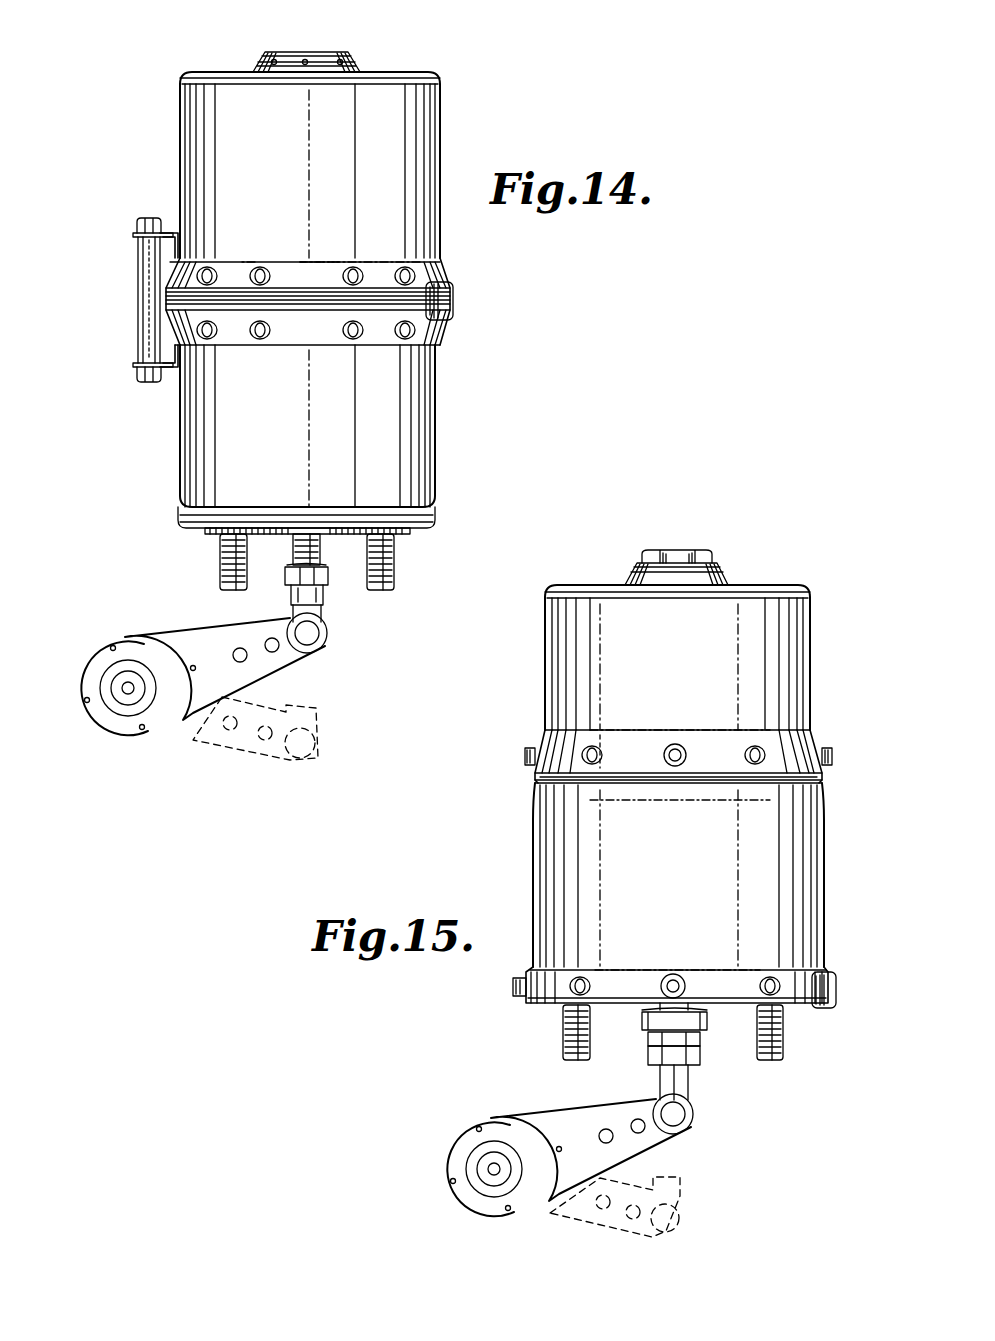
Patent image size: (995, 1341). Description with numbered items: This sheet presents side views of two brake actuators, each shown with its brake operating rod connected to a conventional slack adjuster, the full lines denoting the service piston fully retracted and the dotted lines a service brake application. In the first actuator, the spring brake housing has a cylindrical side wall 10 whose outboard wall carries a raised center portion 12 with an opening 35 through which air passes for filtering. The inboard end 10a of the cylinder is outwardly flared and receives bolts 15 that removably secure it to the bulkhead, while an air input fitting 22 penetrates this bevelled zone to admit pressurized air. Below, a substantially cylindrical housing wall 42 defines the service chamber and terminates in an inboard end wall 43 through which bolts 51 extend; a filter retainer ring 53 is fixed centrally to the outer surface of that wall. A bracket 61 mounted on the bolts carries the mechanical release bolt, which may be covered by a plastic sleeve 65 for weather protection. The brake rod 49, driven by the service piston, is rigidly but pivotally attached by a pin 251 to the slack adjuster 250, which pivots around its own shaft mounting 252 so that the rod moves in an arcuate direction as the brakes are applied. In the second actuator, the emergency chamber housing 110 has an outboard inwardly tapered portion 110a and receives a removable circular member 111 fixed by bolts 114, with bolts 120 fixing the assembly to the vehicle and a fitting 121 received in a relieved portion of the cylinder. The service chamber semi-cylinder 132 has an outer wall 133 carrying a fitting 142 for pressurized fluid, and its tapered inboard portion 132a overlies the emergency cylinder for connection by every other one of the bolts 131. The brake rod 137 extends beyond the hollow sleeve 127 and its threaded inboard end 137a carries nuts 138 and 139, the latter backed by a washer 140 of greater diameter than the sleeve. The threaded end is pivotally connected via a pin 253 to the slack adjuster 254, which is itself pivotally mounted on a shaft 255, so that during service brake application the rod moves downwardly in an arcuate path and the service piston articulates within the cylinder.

In FIG. 14, the cylindrical side wall of spring brake housing 10 is at (440, 116).
In FIG. 14, the inboard end of cylinder 10a is at (326, 262).
In FIG. 14, the raised center portion 12 is at (345, 60).
In FIG. 14, the bolts 15 is at (256, 268).
In FIG. 14, the air input fitting 22 is at (453, 298).
In FIG. 14, the opening 35 is at (277, 60).
In FIG. 14, the cylindrical housing wall 42 is at (432, 418).
In FIG. 14, the inboard end wall 43 is at (178, 520).
In FIG. 14, the brake rod 49 is at (293, 550).
In FIG. 14, the bolts 51 is at (220, 572).
In FIG. 14, the filter retainer ring 53 is at (358, 544).
In FIG. 14, the bracket 61 is at (172, 232).
In FIG. 14, the plastic sleeve 65 is at (138, 301).
In FIG. 14, the slack adjuster 250 is at (140, 652).
In FIG. 14, the pin 251 is at (326, 628).
In FIG. 14, the shaft mounting 252 is at (122, 688).
In FIG. 15, the emergency chamber housing 110 is at (540, 848).
In FIG. 15, the outboard inwardly tapered portion 110a is at (537, 784).
In FIG. 15, the removable circular member 111 is at (533, 1003).
In FIG. 15, the bolts 114 is at (513, 984).
In FIG. 15, the bolts 120 is at (784, 1037).
In FIG. 15, the fitting 121 is at (826, 976).
In FIG. 15, the hollow tube or sleeve 127 is at (710, 1005).
In FIG. 15, the bolts 131 is at (678, 745).
In FIG. 15, the semi-cylinder 132 is at (545, 664).
In FIG. 15, the inboard portion of cylinder 132a is at (614, 737).
In FIG. 15, the outer wall 133 is at (758, 585).
In FIG. 15, the brake rod 137 is at (668, 1005).
In FIG. 15, the externally threaded inboard end 137a is at (690, 1103).
In FIG. 15, the nut 138 is at (714, 1053).
In FIG. 15, the nut 139 is at (650, 1040).
In FIG. 15, the washer 140 is at (708, 1016).
In FIG. 15, the fitting 142 is at (690, 552).
In FIG. 15, the pin 253 is at (690, 1130).
In FIG. 15, the slack adjuster 254 is at (569, 1163).
In FIG. 15, the shaft 255 is at (488, 1169).